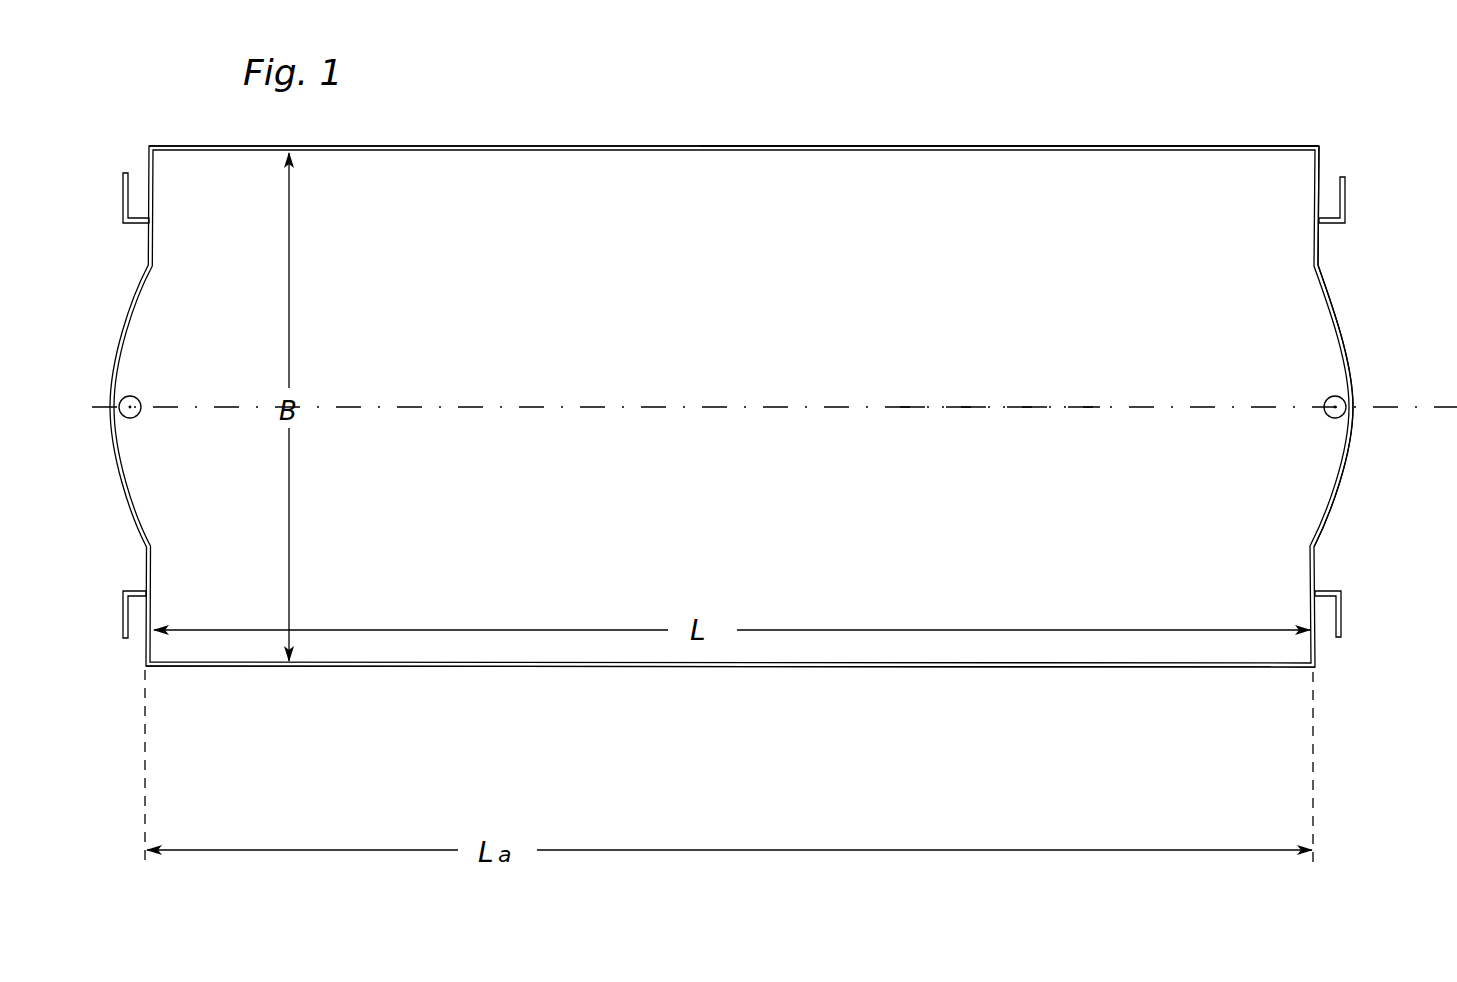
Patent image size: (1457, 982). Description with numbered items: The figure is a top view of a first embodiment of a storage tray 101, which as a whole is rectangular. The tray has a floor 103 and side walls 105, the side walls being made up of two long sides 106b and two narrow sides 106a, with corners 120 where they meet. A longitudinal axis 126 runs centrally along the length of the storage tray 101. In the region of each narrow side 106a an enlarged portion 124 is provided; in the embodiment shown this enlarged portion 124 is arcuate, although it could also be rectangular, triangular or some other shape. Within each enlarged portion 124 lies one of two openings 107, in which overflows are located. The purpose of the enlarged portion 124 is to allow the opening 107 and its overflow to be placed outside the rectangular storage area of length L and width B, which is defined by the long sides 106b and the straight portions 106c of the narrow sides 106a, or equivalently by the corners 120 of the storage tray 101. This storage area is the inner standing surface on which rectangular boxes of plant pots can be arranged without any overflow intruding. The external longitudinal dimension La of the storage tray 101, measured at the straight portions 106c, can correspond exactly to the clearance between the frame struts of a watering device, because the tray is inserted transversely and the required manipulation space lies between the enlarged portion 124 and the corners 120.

The storage tray 101 is at (468, 712).
The floor 103 is at (886, 437).
The side walls 105 is at (870, 148).
The narrow sides 106a is at (1365, 290).
The long sides 106b is at (1033, 142).
The straight portions 106c is at (1323, 170).
The openings 107 is at (141, 403).
The corners 120 is at (1330, 128).
The enlarged portion 124 is at (1352, 448).
The longitudinal axis 126 is at (994, 405).